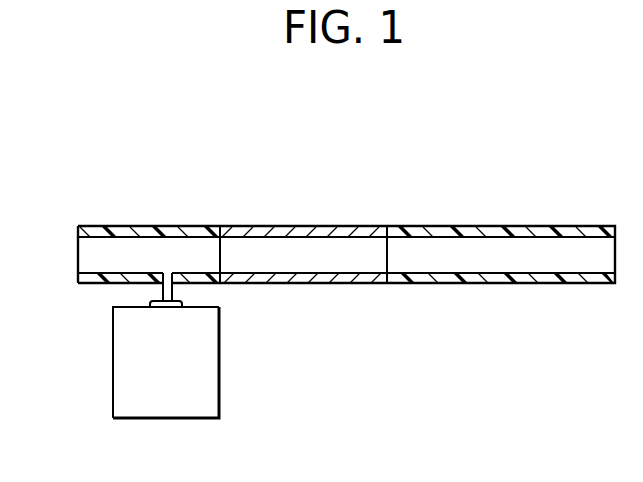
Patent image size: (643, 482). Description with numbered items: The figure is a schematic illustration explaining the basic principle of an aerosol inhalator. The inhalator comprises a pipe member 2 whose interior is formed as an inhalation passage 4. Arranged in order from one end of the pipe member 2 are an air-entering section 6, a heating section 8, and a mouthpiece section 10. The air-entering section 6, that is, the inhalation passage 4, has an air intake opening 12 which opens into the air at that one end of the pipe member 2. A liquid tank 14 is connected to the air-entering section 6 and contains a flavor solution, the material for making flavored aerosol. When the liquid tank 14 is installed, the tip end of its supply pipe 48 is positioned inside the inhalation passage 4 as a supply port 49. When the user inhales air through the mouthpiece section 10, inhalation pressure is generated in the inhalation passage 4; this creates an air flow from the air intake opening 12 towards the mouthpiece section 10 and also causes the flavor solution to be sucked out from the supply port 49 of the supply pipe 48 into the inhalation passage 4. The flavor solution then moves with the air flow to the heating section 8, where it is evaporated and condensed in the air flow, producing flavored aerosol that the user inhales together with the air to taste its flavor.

The pipe member 2 is at (367, 207).
The inhalation passage 4 is at (310, 255).
The air-entering section 6 is at (125, 232).
The heating section 8 is at (283, 231).
The mouthpiece section 10 is at (472, 231).
The air intake opening 12 is at (90, 258).
The liquid tank 14 is at (219, 388).
The supply pipe 48 is at (163, 290).
The supply port 49 is at (167, 272).